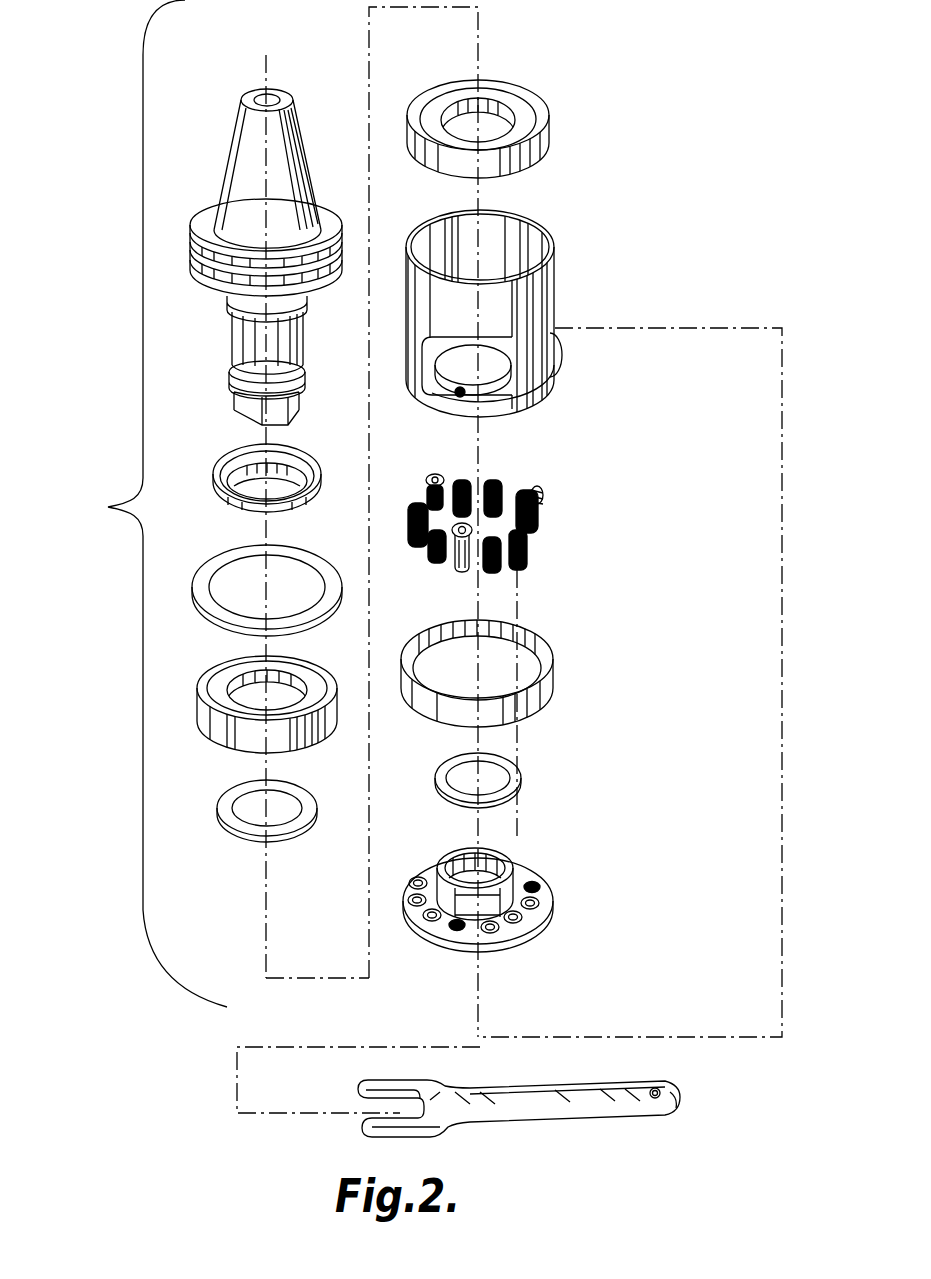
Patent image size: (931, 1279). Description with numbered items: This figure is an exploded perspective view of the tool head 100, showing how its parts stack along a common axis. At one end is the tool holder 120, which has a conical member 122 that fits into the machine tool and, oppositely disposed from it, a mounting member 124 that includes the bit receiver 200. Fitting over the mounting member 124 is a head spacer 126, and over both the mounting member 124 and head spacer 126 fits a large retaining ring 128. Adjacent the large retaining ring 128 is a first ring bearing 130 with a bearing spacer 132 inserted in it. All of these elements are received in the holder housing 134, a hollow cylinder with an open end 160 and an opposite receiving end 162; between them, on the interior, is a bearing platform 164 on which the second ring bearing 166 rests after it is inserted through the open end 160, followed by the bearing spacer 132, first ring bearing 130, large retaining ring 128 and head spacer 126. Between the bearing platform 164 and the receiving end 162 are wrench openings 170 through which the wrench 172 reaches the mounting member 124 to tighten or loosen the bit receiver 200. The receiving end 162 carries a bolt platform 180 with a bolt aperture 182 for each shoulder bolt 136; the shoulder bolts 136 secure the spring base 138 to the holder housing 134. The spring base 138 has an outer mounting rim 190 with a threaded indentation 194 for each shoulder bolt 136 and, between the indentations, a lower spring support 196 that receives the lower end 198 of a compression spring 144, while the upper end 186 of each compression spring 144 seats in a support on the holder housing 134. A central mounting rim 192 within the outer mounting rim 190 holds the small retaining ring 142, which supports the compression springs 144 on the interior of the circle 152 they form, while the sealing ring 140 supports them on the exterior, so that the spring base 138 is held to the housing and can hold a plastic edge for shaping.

The tool head 100 is at (108, 507).
The tool holder 120 is at (176, 193).
The conical member 122 is at (246, 128).
The mounting member 124 is at (190, 360).
The head spacer 126 is at (225, 475).
The large retaining ring 128 is at (195, 598).
The first ring bearing 130 is at (208, 733).
The bearing spacer 132 is at (240, 838).
The holder housing 134 is at (555, 272).
The shoulder bolts 136 is at (535, 500).
The spring base 138 is at (570, 888).
The sealing ring 140 is at (549, 697).
The small retaining ring 142 is at (518, 775).
The compression springs 144 is at (547, 535).
The circle 152 is at (523, 632).
The open end 160 is at (518, 222).
The receiving end 162 is at (538, 398).
The bearing platform 164 is at (455, 275).
The second ring bearing 166 is at (528, 102).
The wrench openings 170 is at (550, 318).
The wrench 172 is at (585, 1102).
The bolt platform 180 is at (440, 386).
The bolt aperture 182 is at (426, 398).
The upper end 186 is at (494, 483).
The outer mounting rim 190 is at (505, 942).
The central mounting rim 192 is at (505, 866).
The threaded indentation 194 is at (440, 940).
The lower spring support 196 is at (545, 898).
The lower end 198 is at (441, 570).
The bit receiver 200 is at (238, 410).